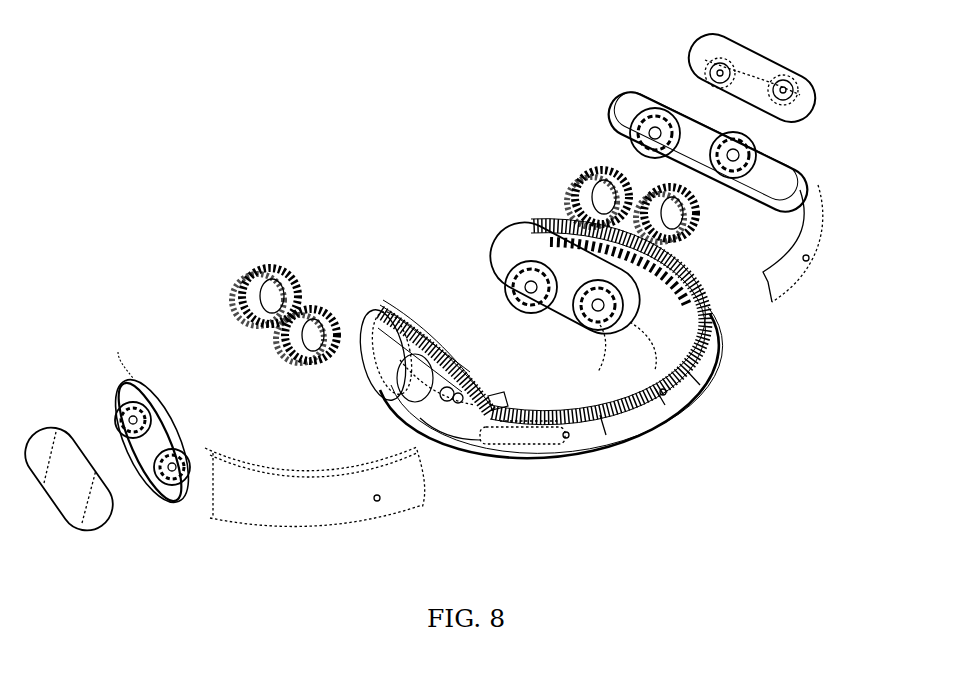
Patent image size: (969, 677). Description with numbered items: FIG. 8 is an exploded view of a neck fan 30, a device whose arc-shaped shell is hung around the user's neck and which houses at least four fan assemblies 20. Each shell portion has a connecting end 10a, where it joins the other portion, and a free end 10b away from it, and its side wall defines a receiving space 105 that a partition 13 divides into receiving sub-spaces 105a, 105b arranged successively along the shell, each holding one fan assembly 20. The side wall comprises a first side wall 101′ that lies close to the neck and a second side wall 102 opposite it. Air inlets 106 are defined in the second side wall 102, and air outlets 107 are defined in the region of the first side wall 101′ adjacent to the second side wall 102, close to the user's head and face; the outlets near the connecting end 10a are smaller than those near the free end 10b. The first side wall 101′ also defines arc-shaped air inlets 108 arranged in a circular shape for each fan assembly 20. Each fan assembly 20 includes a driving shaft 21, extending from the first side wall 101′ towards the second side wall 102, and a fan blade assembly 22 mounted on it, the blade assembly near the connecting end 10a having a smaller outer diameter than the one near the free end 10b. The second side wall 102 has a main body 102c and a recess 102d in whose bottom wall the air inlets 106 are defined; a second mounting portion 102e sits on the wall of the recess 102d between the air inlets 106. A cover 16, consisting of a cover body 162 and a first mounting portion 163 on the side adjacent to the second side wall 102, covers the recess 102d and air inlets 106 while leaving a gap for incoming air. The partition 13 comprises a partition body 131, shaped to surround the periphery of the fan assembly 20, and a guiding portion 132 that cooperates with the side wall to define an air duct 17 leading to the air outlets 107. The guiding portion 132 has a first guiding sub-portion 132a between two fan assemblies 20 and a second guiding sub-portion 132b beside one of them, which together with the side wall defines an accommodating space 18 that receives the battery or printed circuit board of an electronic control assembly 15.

The neck fan 30 is at (316, 111).
The fan assembly 20 is at (321, 300).
The fan blade assembly 22 is at (295, 280).
The driving shaft 21 is at (372, 325).
The air inlets 108 is at (497, 276).
The first side wall 101′ is at (432, 330).
The air outlets 107 is at (438, 342).
The receiving space 105 is at (493, 353).
The receiving sub-space 105a is at (443, 340).
The receiving sub-space 105b is at (450, 357).
The air duct 17 is at (493, 395).
The partition 13 is at (380, 372).
The partition body 131 is at (385, 372).
The guiding portion 132 is at (395, 404).
The first guiding sub-portion 132a is at (440, 392).
The second guiding sub-portion 132b is at (418, 430).
The free end 10b is at (133, 357).
The connecting end 10a is at (420, 506).
The second side wall 102 is at (812, 193).
The main body 102c is at (163, 390).
The recess 102d is at (168, 405).
The second mounting portion 102e is at (172, 500).
The air inlets 106 is at (136, 470).
The cover 16 is at (438, 283).
The cover body 162 is at (760, 57).
The first mounting portion 163 is at (775, 77).
The electronic control assembly 15 is at (515, 445).
The accommodating space 18 is at (550, 354).